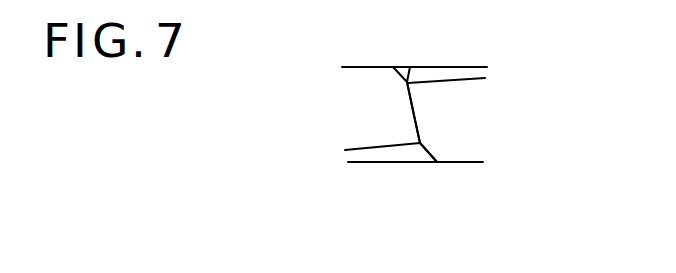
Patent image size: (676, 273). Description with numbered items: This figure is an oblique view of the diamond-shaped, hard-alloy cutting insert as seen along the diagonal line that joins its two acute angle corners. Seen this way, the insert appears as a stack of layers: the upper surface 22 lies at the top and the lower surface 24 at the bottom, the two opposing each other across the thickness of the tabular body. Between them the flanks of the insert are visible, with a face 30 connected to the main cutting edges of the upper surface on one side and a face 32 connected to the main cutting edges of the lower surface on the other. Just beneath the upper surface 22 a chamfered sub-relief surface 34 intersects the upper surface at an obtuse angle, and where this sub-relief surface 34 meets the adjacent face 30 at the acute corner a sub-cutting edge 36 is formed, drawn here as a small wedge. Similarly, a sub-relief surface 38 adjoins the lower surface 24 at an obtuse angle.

The upper surface 22 is at (362, 67).
The sub-cutting edge 36 is at (408, 67).
The sub-relief surface 34 is at (467, 72).
The face 32 is at (340, 108).
The face 30 is at (447, 110).
The sub-relief surface 38 is at (375, 153).
The lower surface 24 is at (462, 163).